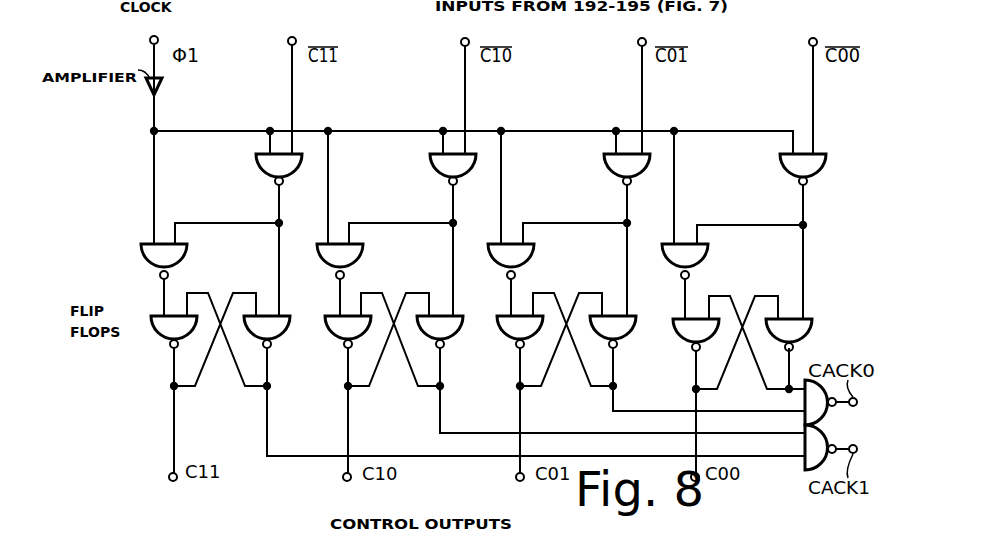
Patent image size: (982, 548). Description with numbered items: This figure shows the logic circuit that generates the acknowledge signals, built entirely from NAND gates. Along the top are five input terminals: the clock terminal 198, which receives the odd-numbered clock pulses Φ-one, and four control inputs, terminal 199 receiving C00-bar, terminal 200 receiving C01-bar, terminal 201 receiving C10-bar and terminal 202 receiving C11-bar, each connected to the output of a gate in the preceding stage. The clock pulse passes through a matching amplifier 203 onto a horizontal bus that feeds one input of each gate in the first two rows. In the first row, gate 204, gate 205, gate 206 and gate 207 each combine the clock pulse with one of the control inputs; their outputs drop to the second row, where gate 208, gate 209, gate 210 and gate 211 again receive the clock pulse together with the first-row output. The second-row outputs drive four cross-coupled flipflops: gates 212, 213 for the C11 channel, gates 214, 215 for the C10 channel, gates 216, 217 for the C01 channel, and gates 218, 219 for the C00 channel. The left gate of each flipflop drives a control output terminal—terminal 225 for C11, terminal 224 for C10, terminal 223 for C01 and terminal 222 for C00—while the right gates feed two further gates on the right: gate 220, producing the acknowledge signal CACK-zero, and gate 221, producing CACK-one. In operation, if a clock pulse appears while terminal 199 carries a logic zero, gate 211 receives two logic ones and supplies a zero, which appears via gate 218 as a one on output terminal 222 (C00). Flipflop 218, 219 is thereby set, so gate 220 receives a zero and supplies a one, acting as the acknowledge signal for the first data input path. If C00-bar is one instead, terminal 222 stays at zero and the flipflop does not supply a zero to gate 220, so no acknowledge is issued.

The input terminal 198 is at (158, 37).
The input terminal 199 is at (817, 39).
The input terminal 200 is at (646, 39).
The input terminal 201 is at (469, 39).
The input terminal 202 is at (296, 38).
The matching amplifier 203 is at (162, 86).
The logic NAND-gate 204 is at (256, 164).
The logic NAND-gate 205 is at (430, 164).
The logic NAND-gate 206 is at (604, 164).
The logic NAND-gate 207 is at (780, 165).
The logic NAND-gate 208 is at (188, 258).
The logic NAND-gate 209 is at (363, 258).
The logic NAND-gate 210 is at (534, 258).
The logic NAND-gate 211 is at (708, 259).
The logic NAND-gate 212 is at (158, 337).
The logic NAND-gate 213 is at (284, 337).
The logic NAND-gate 214 is at (326, 320).
The logic NAND-gate 215 is at (456, 338).
The logic NAND-gate 216 is at (498, 321).
The logic NAND-gate 217 is at (630, 338).
The logic NAND-gate 218 is at (674, 324).
The logic NAND-gate 219 is at (812, 328).
The logic NAND-gate 220 is at (804, 402).
The logic NAND-gate 221 is at (804, 448).
The output terminal 222 is at (692, 480).
The output terminal 223 is at (517, 480).
The output terminal 224 is at (344, 480).
The output terminal 225 is at (170, 480).